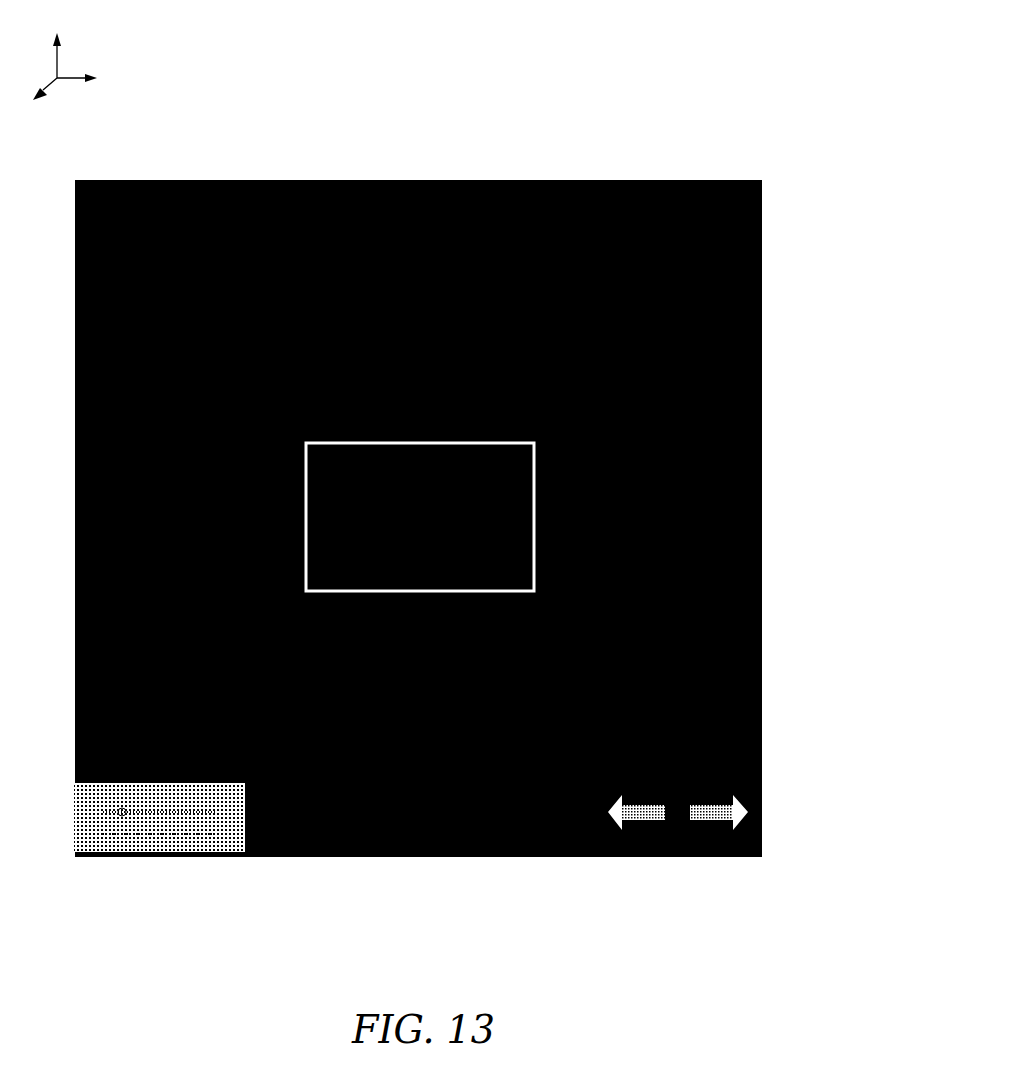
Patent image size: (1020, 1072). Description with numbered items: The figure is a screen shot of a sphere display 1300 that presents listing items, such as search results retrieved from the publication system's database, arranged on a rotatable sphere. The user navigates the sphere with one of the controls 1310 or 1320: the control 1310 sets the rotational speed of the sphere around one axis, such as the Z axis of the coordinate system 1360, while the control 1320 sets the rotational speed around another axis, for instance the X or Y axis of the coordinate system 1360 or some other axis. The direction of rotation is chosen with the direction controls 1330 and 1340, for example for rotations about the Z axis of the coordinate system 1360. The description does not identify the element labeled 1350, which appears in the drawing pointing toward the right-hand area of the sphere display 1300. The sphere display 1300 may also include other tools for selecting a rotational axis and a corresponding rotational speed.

The sphere display 1300 is at (578, 102).
The control 1310 is at (137, 833).
The control 1320 is at (197, 812).
The direction control 1330 is at (618, 812).
The direction control 1340 is at (730, 822).
The background of the display 1350 is at (762, 572).
The coordinate system 1360 is at (80, 41).